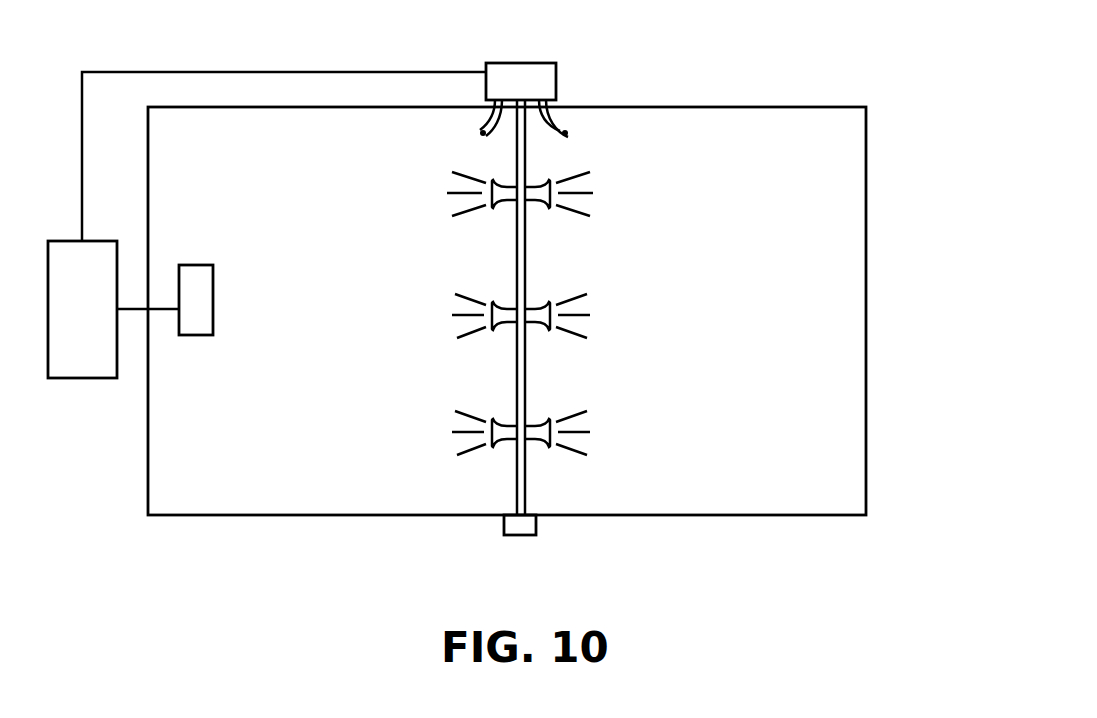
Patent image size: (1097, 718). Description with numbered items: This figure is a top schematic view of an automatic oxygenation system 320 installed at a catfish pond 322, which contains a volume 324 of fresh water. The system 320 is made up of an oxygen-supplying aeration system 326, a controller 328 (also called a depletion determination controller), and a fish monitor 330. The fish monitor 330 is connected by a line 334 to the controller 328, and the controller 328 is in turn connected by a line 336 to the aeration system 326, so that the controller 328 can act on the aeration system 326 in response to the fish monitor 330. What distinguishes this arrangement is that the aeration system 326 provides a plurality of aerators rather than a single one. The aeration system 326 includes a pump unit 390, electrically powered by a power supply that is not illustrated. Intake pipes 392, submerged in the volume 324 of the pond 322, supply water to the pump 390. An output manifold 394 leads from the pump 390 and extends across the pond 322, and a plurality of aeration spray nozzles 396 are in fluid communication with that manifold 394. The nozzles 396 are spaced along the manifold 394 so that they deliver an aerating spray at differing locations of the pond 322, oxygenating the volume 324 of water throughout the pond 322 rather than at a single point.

The automatic oxygenation system 320 is at (786, 82).
The catfish pond 322 is at (700, 515).
The volume of fresh water 324 is at (747, 332).
The aeration system 326 is at (582, 71).
The controller 328 is at (70, 378).
The fish monitor 330 is at (205, 327).
The line 334 is at (133, 310).
The line 336 is at (118, 72).
The pump unit 390 is at (519, 78).
The intake pipes 392 is at (480, 134).
The output manifold 394 is at (527, 248).
The aeration spray nozzles 396 is at (545, 313).